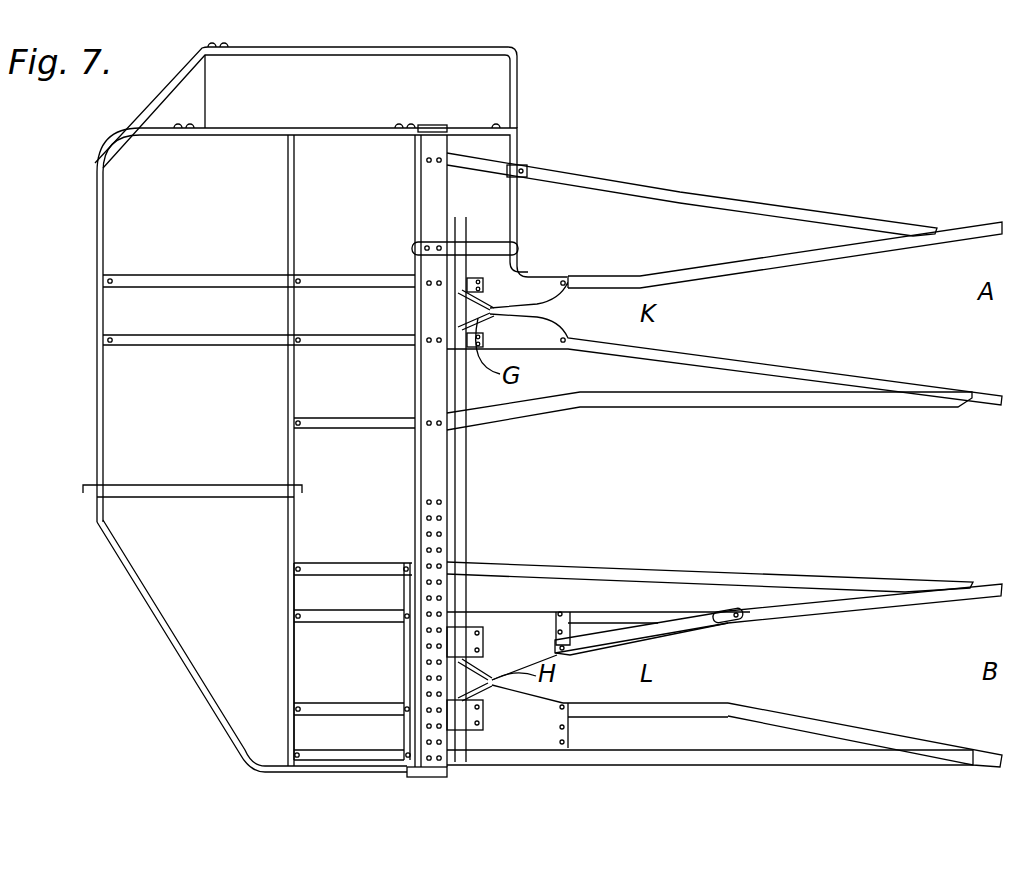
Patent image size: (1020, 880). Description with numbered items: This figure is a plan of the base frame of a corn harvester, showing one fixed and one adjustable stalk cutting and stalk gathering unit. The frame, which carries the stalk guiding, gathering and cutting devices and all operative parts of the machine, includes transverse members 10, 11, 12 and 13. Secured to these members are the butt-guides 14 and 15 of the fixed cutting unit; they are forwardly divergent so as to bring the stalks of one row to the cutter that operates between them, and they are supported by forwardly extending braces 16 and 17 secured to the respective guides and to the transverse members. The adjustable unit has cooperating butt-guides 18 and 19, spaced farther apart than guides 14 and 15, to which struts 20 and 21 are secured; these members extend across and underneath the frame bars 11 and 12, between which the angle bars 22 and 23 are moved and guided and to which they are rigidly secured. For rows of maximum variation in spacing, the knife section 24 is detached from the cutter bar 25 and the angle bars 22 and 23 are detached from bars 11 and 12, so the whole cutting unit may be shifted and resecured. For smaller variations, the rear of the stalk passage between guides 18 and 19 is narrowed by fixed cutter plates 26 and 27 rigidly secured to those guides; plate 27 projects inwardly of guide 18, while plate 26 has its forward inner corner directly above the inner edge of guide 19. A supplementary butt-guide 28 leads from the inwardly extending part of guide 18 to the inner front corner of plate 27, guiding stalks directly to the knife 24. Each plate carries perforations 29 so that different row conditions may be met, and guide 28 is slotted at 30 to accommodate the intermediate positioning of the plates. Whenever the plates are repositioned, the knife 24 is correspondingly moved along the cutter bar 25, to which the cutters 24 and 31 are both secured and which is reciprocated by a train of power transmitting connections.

The transverse member 10 is at (103, 385).
The transverse member 11 is at (290, 380).
The transverse member 12 is at (418, 376).
The transverse member 13 is at (437, 462).
The butt-guide 14 is at (220, 330).
The butt-guide 15 is at (190, 280).
The brace 16 is at (700, 408).
The brace 17 is at (705, 188).
The butt-guide 18 is at (368, 596).
The butt-guide 19 is at (375, 710).
The strut 20 is at (358, 565).
The strut 21 is at (375, 768).
The angle bar 22 is at (297, 638).
The angle bar 23 is at (400, 656).
The knife 24 is at (470, 662).
The cutter bar 25 is at (460, 518).
The fixed cutter plate 26 is at (520, 737).
The fixed cutter plate 27 is at (540, 618).
The supplementary butt-guide 28 is at (670, 628).
The perforations 29 is at (563, 632).
The slot 30 is at (735, 620).
The cutter 31 is at (522, 292).